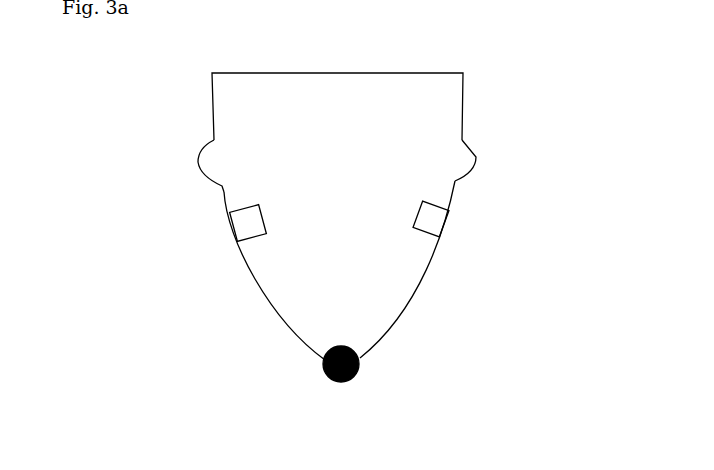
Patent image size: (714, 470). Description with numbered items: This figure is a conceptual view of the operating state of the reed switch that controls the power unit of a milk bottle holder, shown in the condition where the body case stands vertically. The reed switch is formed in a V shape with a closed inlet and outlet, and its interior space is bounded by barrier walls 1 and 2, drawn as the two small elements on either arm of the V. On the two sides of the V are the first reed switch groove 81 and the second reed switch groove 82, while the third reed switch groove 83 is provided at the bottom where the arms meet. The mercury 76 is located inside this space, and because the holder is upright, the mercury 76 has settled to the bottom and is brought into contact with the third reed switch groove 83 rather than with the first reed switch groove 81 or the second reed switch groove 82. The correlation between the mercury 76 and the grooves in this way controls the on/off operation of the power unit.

The barrier wall 1 is at (246, 221).
The barrier wall 2 is at (430, 223).
The first reed switch groove 81 is at (200, 163).
The second reed switch groove 82 is at (477, 155).
The third reed switch groove 83 is at (323, 373).
The mercury 76 is at (360, 362).